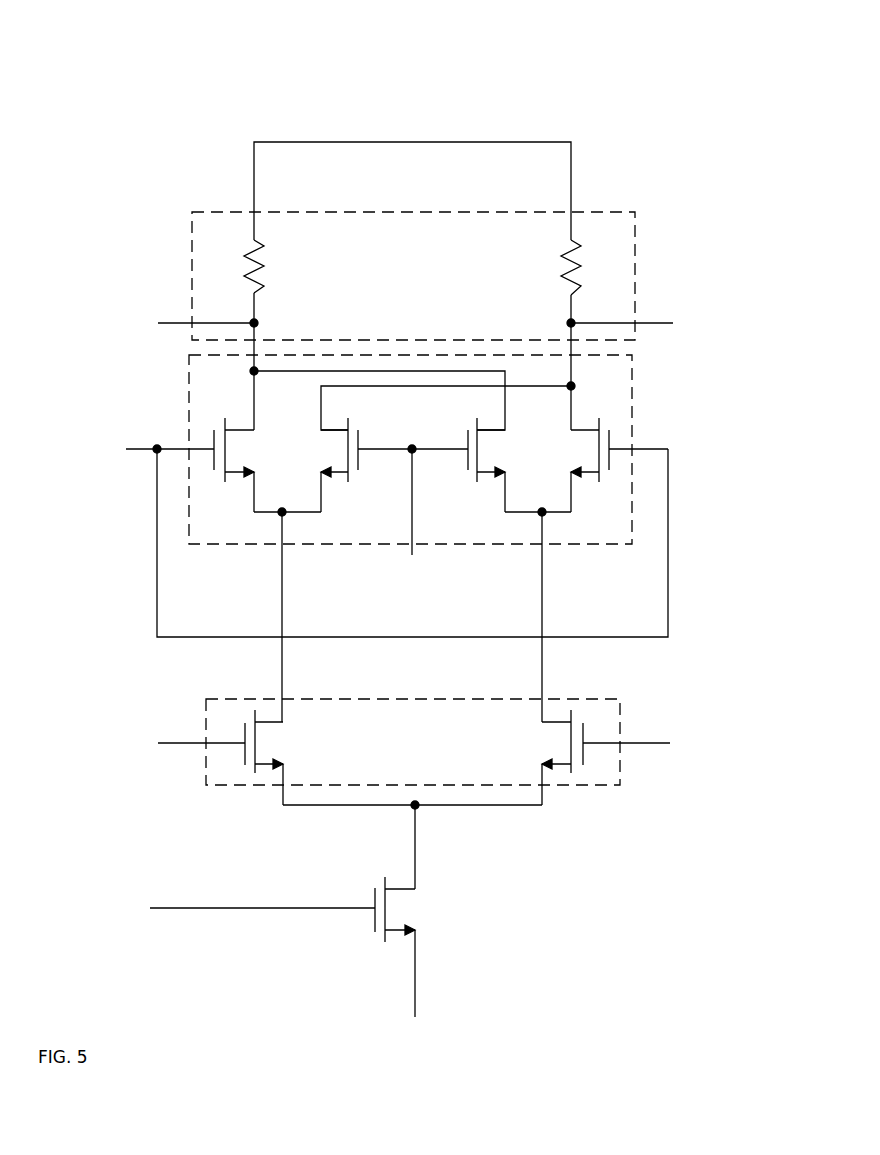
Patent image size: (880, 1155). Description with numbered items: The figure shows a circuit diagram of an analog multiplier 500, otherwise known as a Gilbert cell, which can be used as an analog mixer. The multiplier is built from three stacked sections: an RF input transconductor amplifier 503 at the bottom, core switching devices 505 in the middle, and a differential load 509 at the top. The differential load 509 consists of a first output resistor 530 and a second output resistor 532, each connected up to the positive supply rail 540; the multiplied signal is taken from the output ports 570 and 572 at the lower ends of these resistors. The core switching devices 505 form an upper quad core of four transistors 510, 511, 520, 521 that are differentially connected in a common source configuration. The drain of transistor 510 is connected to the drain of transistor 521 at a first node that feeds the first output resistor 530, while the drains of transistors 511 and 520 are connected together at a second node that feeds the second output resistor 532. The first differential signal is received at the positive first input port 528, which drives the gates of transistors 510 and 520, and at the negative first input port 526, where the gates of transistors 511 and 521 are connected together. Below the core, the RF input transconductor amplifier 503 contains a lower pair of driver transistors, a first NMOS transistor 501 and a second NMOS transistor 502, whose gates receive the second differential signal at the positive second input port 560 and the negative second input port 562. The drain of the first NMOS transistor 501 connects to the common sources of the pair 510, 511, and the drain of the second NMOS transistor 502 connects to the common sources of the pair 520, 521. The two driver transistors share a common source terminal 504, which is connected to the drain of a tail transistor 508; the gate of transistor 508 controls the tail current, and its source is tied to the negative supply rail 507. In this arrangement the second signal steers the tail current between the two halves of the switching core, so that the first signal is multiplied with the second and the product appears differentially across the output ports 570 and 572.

The analog multiplier 500 is at (113, 62).
The supply rail 540 is at (408, 106).
The first output resistor 530 is at (262, 268).
The second output resistor 532 is at (555, 279).
The differential load 509 is at (637, 257).
The output port 570 is at (128, 313).
The output port 572 is at (693, 311).
The core switching devices 505 is at (189, 398).
The input port I/Q 1+ 528 is at (95, 440).
The transistor 510 is at (238, 451).
The transistor 511 is at (332, 447).
The transistor 521 is at (497, 441).
The transistor 520 is at (582, 447).
The input port I/Q 1− 526 is at (420, 556).
The RF input transconductor amplifier 503 is at (206, 715).
The input port I/Q 2+ 560 is at (96, 745).
The input port I/Q 2− 562 is at (676, 736).
The first NMOS transistor 501 is at (268, 738).
The second NMOS transistor 502 is at (542, 742).
The common source terminal 504 is at (413, 812).
The transistor 508 is at (395, 905).
The negative supply rail 507 is at (428, 1035).